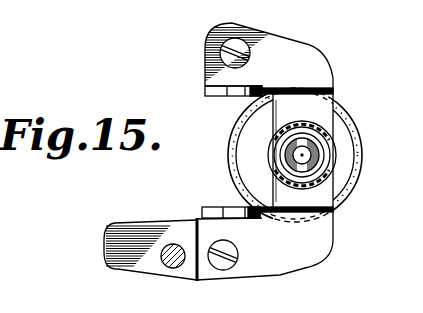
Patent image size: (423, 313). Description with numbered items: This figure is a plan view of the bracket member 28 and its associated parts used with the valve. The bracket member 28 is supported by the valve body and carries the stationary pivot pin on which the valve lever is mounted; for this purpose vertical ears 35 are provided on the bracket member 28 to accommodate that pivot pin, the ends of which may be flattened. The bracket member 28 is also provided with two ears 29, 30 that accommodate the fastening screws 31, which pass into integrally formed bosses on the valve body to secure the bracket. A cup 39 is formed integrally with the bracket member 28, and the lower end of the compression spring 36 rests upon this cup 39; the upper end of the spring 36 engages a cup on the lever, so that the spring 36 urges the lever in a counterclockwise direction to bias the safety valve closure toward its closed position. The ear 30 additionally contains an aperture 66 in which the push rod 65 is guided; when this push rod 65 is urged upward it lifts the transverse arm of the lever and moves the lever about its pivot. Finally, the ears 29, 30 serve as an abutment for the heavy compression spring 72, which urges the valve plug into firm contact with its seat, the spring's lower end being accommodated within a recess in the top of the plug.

The bracket member 28 is at (312, 44).
The ear 29 is at (224, 27).
The fastening screws 31 is at (237, 43).
The vertical ears 35 is at (213, 91).
The heavy compression spring 72 is at (231, 134).
The compression spring 36 is at (331, 147).
The cup 39 is at (312, 138).
The ear 30 is at (213, 278).
The aperture 66 is at (165, 266).
The push rod 65 is at (176, 266).